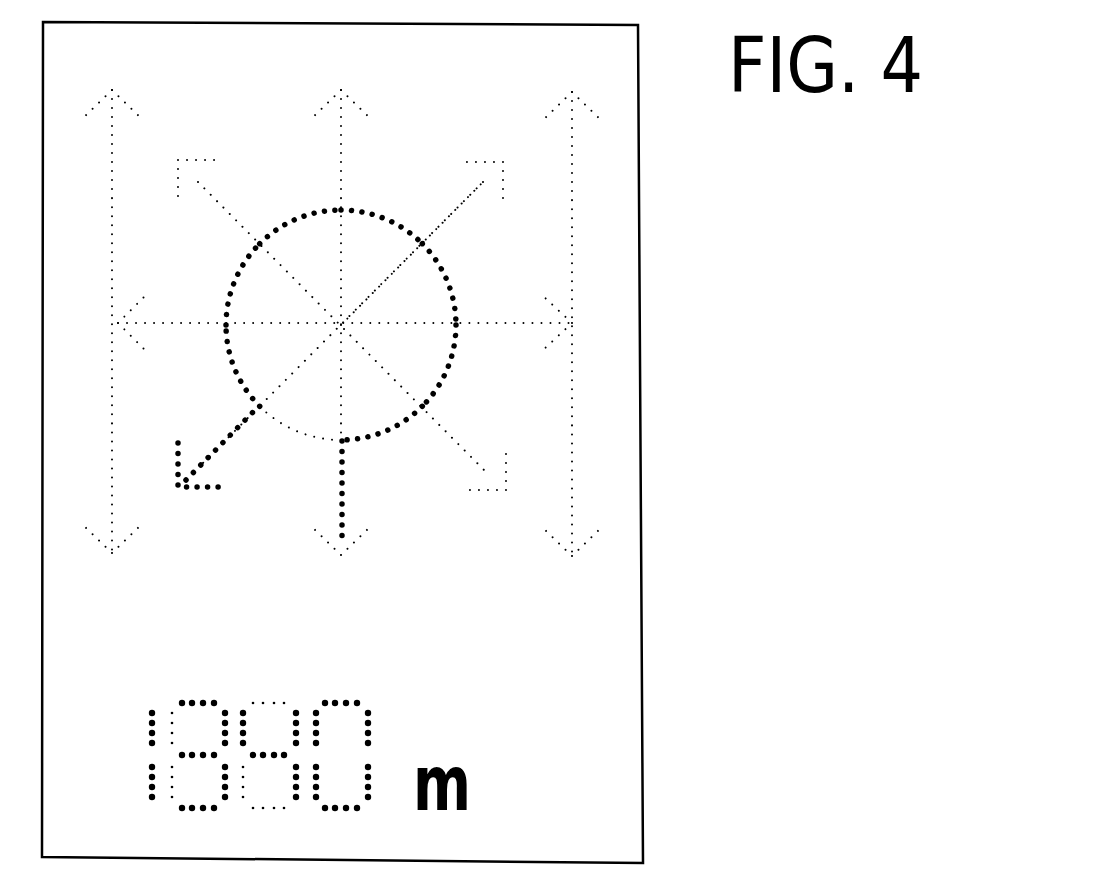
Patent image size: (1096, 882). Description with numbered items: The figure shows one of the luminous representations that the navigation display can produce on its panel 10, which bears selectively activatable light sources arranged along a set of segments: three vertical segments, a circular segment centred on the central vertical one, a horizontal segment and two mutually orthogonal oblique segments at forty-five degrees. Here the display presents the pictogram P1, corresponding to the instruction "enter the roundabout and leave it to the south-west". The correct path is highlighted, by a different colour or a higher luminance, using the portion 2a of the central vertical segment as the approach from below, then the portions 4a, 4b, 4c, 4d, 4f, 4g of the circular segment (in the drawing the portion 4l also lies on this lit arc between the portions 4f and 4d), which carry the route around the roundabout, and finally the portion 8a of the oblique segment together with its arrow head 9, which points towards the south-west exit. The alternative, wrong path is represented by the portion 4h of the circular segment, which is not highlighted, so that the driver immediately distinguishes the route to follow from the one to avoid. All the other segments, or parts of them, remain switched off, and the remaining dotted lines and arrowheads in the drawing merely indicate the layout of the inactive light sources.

The panel 10 is at (664, 407).
The pictogram P1 is at (408, 202).
The portion of the central vertical segment 2a is at (343, 500).
The portion of the circular segment 4a is at (389, 433).
The portion of the circular segment 4b is at (450, 367).
The portion of the circular segment 4c is at (448, 277).
The portion of the circular segment 4d is at (362, 210).
The portion of the circular segment 4f is at (230, 285).
The portion of the circular segment 4g is at (238, 383).
The portion of the circular segment 4h is at (293, 432).
The ring segment 4l is at (293, 220).
The portion of the oblique segment 8a is at (215, 450).
The arrow head 9 is at (178, 465).